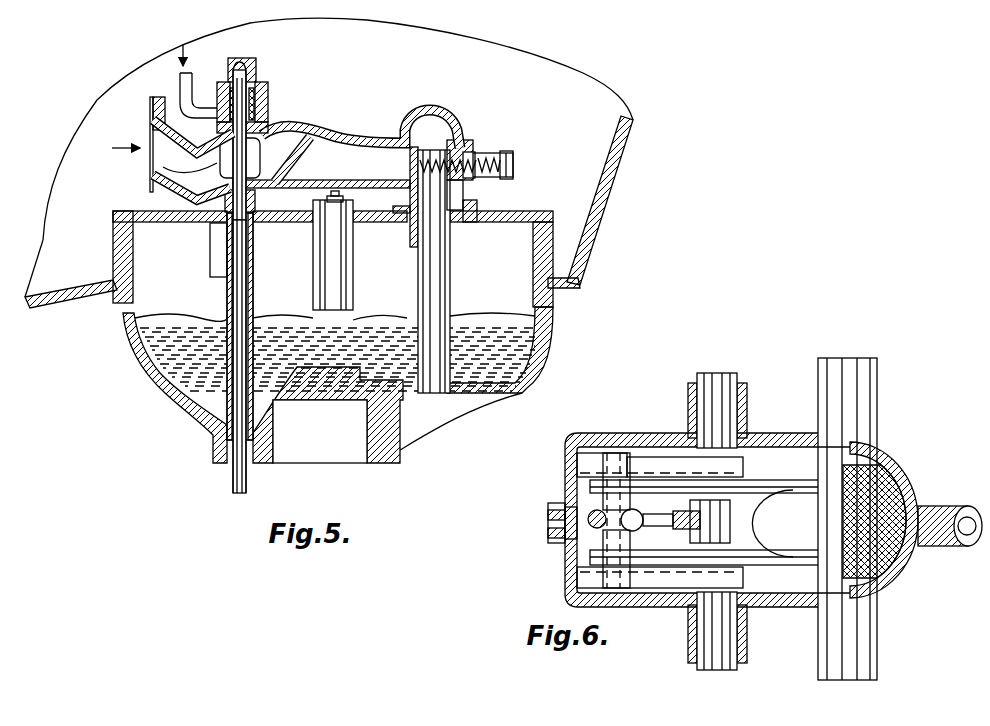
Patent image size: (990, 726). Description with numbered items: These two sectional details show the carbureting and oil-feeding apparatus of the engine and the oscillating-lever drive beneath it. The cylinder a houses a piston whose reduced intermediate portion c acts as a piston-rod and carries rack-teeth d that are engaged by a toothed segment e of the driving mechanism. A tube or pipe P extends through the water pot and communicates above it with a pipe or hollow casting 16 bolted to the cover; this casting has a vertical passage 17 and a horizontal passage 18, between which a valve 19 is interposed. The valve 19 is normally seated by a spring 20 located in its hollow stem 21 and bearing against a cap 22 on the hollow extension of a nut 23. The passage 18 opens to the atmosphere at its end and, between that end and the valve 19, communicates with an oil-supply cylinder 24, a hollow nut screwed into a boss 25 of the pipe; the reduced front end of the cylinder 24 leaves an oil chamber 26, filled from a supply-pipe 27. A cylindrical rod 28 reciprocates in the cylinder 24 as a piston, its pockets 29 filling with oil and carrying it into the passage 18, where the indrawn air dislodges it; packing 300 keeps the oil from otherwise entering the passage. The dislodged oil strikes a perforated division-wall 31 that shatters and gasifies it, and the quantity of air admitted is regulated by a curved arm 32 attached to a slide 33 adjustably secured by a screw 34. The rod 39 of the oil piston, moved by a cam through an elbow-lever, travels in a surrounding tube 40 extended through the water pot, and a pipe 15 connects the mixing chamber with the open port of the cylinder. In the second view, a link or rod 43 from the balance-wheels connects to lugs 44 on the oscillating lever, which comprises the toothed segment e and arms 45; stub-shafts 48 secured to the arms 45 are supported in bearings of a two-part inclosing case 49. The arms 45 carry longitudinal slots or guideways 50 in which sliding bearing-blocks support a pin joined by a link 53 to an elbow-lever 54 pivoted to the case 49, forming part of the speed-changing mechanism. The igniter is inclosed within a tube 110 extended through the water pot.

In FIG. 6, the pipe 15 is at (969, 516).
In FIG. 5, the pipe or hollow casting 16 is at (403, 209).
In FIG. 5, the vertical passage 17 is at (455, 199).
In FIG. 5, the horizontal passage 18 is at (355, 141).
In FIG. 5, the valve 19 is at (411, 166).
In FIG. 5, the spring 20 is at (443, 158).
In FIG. 5, the hollow stem 21 is at (470, 152).
In FIG. 5, the cap 22 is at (513, 162).
In FIG. 5, the nut 23 is at (468, 140).
In FIG. 5, the oil-supply cylinder 24 is at (255, 73).
In FIG. 5, the boss 25 is at (265, 106).
In FIG. 5, the oil chamber 26 is at (268, 119).
In FIG. 5, the supply-pipe 27 is at (180, 88).
In FIG. 5, the cylindrical rod 28 is at (241, 68).
In FIG. 5, the pockets 29 is at (262, 94).
In FIG. 5, the perforated plate or division-wall 31 is at (298, 156).
In FIG. 5, the curved plate or arm 32 is at (198, 185).
In FIG. 5, the slide or plate 33 is at (152, 127).
In FIG. 5, the screw 34 is at (151, 113).
In FIG. 5, the rod 39 is at (229, 471).
In FIG. 5, the tube or pipe 40 is at (253, 291).
In FIG. 6, the link or rod 43 is at (588, 525).
In FIG. 6, the lugs or ears 44 is at (605, 453).
In FIG. 6, the arms 45 is at (773, 482).
In FIG. 6, the stub-shafts 48 is at (712, 375).
In FIG. 6, the inclosing case 49 is at (648, 433).
In FIG. 6, the longitudinal slots or guideways 50 is at (660, 520).
In FIG. 6, the link 53 is at (580, 498).
In FIG. 6, the elbow-lever 54 is at (675, 528).
In FIG. 5, the tube 110 is at (353, 278).
In FIG. 5, the packing 300 is at (256, 131).
In FIG. 5, the tube or pipe P is at (450, 278).
In FIG. 6, the cylinder a is at (905, 484).
In FIG. 6, the intermediate portion c is at (895, 477).
In FIG. 6, the rack-teeth d is at (835, 600).
In FIG. 6, the toothed segment e is at (818, 450).